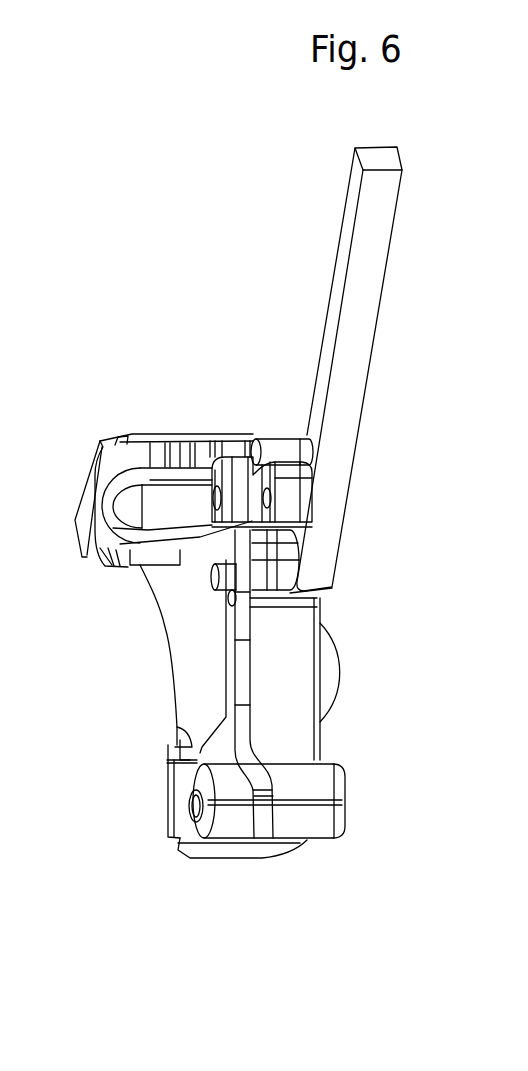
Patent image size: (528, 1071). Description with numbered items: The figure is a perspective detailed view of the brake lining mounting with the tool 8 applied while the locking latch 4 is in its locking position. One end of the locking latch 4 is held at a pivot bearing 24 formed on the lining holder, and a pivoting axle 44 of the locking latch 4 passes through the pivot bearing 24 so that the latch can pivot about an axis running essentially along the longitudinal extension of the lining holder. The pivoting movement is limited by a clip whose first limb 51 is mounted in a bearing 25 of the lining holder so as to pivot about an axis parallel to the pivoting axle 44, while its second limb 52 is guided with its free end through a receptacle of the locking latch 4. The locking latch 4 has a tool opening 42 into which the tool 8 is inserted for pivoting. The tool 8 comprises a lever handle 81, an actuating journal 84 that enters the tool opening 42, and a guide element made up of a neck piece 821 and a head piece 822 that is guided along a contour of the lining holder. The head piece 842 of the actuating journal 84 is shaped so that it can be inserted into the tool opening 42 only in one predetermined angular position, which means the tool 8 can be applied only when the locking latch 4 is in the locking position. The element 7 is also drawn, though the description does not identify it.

The tool 8 is at (430, 186).
The lever handle 81 is at (368, 256).
The neck piece 821 is at (291, 445).
The head piece 822 is at (272, 460).
The actuating journal 84 is at (290, 577).
The head piece 842 is at (227, 592).
The tool opening 42 is at (229, 597).
The first limb 51 is at (180, 477).
The second limb 52 is at (177, 543).
The bearing 25 is at (297, 502).
The roller 7 is at (325, 680).
The locking latch 4 is at (252, 745).
The pivot bearing 24 is at (297, 820).
The pivoting axle 44 is at (193, 813).